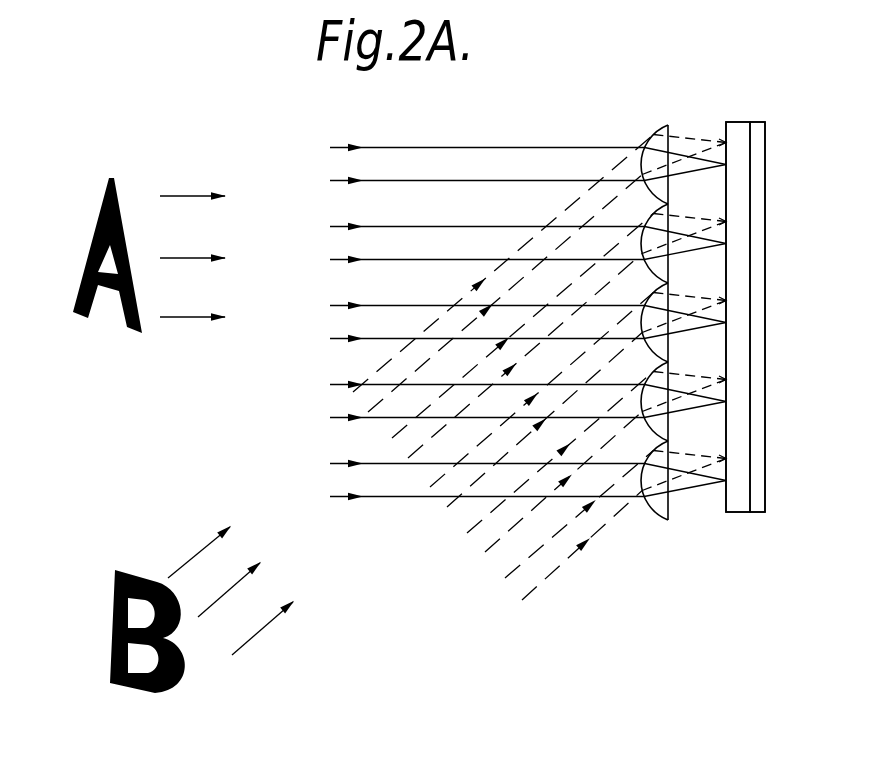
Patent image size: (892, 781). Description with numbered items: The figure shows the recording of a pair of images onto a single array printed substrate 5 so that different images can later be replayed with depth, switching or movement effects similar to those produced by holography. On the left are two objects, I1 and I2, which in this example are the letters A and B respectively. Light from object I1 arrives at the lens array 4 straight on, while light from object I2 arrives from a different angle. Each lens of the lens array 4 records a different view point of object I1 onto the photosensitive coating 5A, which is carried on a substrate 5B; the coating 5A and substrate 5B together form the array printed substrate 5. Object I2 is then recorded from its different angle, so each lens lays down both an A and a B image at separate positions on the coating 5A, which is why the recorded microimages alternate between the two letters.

The lens array 4 is at (662, 130).
The array printed substrate 5 is at (779, 281).
The photosensitive coating 5A is at (748, 122).
The substrate 5B is at (757, 247).
The object I1 is at (87, 255).
The object I2 is at (120, 631).